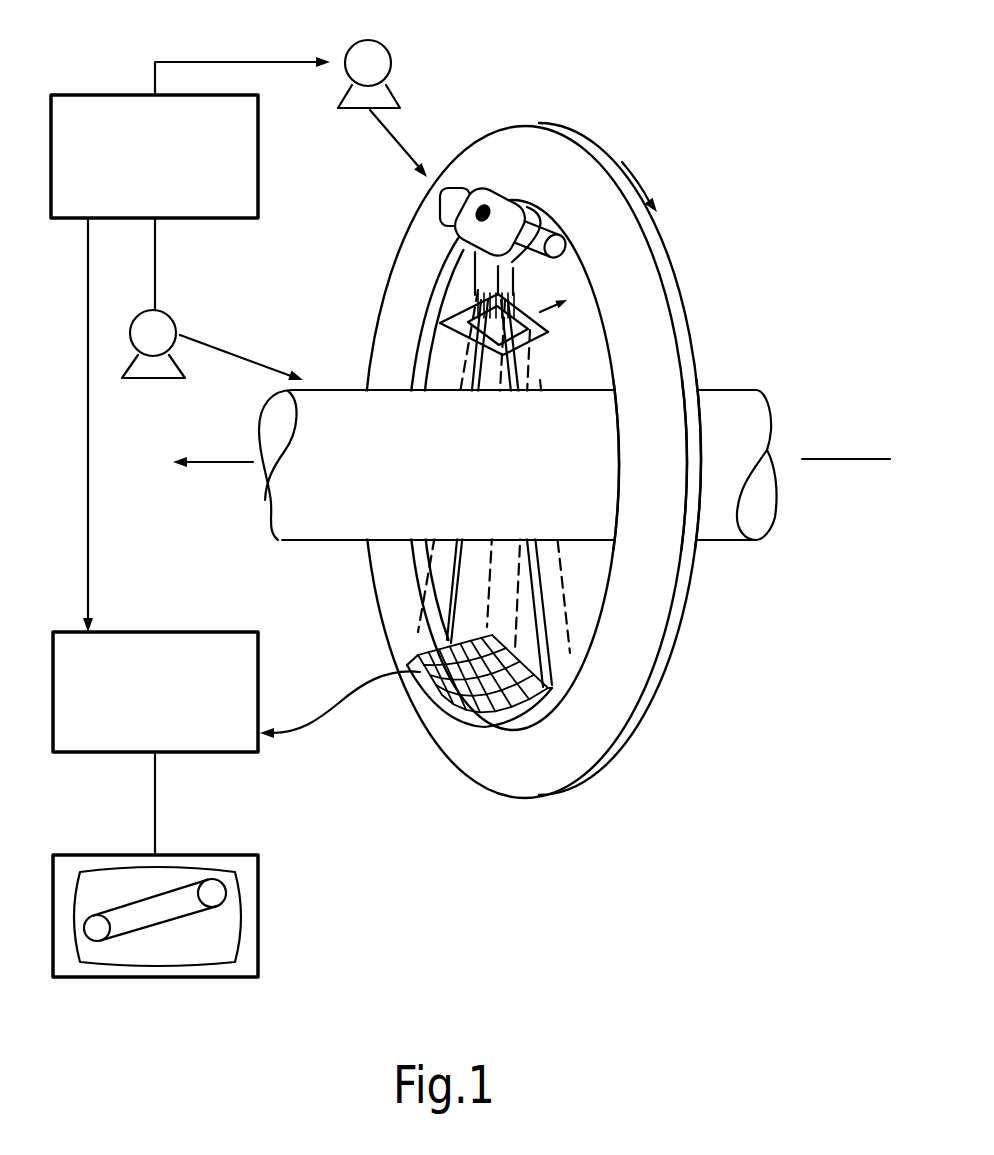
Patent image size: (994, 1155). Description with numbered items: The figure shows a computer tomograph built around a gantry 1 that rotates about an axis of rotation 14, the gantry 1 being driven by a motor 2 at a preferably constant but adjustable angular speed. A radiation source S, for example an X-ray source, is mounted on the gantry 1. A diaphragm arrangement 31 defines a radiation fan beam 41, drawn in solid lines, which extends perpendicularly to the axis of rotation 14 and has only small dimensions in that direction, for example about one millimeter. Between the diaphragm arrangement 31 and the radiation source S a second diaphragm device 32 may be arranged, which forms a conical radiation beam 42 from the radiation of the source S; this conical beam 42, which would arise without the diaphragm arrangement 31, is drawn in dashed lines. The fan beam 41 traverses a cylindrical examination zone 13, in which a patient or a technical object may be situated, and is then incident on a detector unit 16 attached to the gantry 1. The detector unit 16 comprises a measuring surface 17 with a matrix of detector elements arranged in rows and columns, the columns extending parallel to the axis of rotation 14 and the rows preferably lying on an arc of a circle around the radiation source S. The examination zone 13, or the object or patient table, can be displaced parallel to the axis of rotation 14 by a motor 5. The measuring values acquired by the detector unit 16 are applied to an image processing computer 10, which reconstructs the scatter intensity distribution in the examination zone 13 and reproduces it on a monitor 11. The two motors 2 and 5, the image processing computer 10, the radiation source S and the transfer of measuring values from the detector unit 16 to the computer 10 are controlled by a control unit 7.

The gantry 1 is at (645, 633).
The motor 2 is at (392, 57).
The motor 5 is at (170, 318).
The control unit 7 is at (92, 92).
The image processing computer 10 is at (99, 735).
The monitor 11 is at (262, 953).
The examination zone 13 is at (330, 408).
The axis of rotation 14 is at (210, 458).
The detector unit 16 is at (430, 713).
The measuring surface 17 is at (456, 732).
The diaphragm arrangement 31 is at (457, 312).
The second diaphragm device 32 is at (483, 277).
The fan beam 41 is at (535, 584).
The conical radiation beam 42 is at (528, 373).
The radiation source S is at (510, 190).